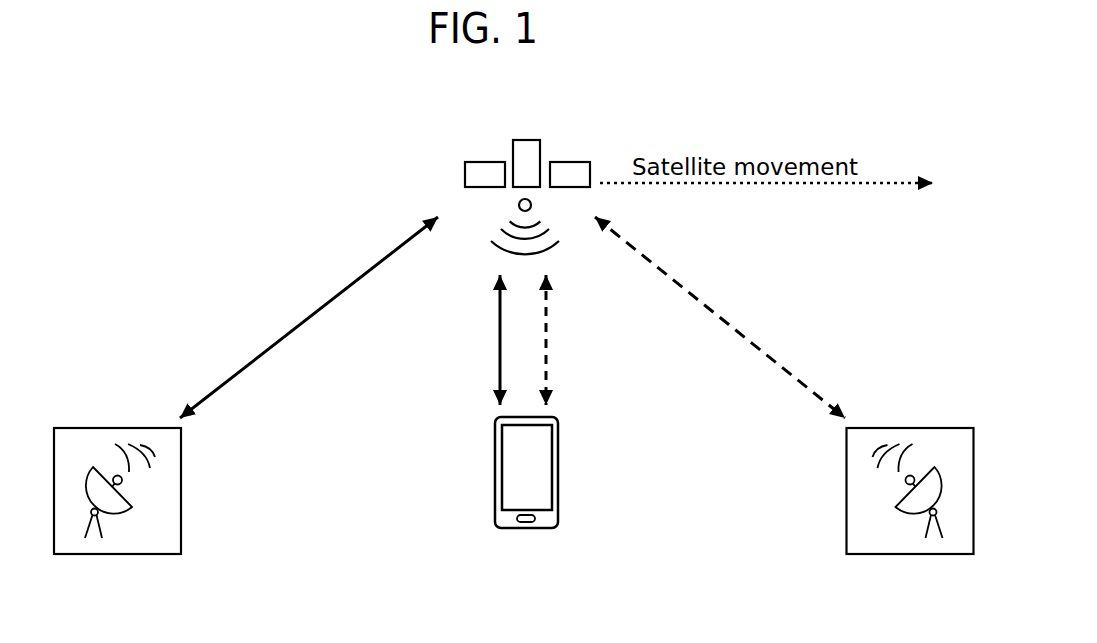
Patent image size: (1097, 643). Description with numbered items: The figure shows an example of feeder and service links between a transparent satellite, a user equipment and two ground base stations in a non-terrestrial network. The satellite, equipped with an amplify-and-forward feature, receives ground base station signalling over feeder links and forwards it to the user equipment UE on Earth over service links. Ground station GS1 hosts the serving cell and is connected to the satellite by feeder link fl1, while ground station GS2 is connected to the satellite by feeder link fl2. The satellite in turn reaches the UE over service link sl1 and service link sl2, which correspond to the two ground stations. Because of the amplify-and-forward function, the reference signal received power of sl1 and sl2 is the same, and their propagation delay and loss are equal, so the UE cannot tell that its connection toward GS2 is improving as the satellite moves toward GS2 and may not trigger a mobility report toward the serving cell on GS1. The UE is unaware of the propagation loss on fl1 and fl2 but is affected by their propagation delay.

The ground station 1 GS1 is at (117, 509).
The ground station 2 GS2 is at (910, 509).
The user equipment UE is at (526, 496).
The feeder link 1 fl1 is at (309, 317).
The feeder link 2 fl2 is at (720, 317).
The service link 1 sl1 is at (480, 340).
The service link 2 sl2 is at (569, 340).